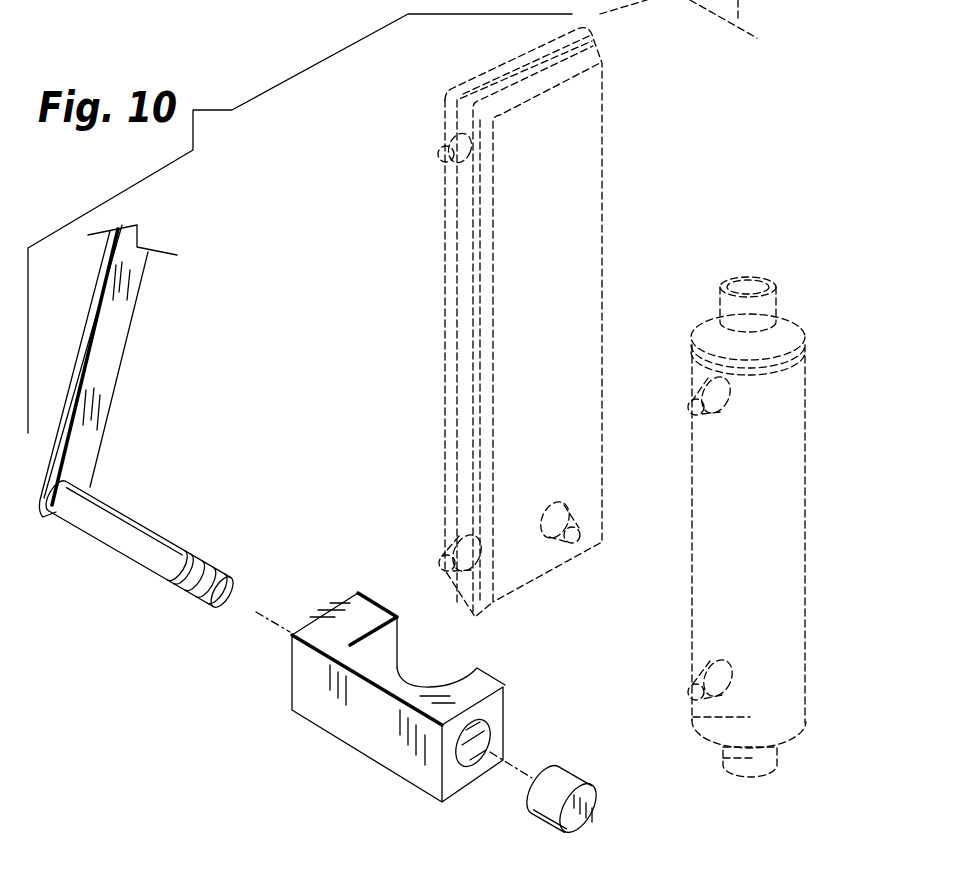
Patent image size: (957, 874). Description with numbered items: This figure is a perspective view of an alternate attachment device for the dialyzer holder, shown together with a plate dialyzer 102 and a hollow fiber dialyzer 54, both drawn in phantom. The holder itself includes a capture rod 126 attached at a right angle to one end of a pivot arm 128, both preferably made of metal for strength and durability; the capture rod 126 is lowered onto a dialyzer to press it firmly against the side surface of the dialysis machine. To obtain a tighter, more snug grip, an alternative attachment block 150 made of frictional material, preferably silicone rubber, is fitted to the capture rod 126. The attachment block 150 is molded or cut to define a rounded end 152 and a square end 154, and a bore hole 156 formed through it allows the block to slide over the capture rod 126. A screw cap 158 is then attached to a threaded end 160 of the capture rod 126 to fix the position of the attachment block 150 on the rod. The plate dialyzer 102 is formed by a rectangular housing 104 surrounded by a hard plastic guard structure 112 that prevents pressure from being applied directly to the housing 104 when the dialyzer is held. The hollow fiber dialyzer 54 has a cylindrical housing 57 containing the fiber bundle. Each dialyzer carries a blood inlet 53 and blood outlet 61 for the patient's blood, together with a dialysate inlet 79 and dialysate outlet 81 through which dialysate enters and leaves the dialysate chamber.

The plate dialyzer 102 is at (630, 268).
The rectangular housing 104 is at (527, 322).
The guard structure 112 is at (495, 83).
The blood inlet 53 is at (760, 313).
The pivot arm 128 is at (107, 362).
The capture rod 126 is at (120, 523).
The threaded end 160 is at (237, 577).
The attachment block 150 is at (351, 688).
The rounded end 152 is at (448, 678).
The square end 154 is at (383, 648).
The bore hole 156 is at (473, 745).
The screw cap 158 is at (568, 777).
The cylindrical housing 57 is at (712, 530).
The hollow fiber dialyzer 54 is at (656, 568).
The dialysate outlet 81 is at (712, 403).
The dialysate inlet 79 is at (558, 519).
The blood outlet 61 is at (450, 553).